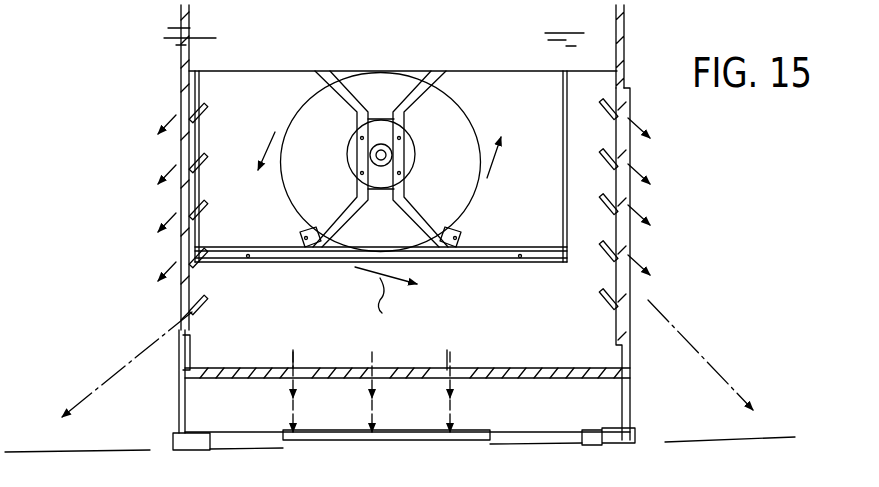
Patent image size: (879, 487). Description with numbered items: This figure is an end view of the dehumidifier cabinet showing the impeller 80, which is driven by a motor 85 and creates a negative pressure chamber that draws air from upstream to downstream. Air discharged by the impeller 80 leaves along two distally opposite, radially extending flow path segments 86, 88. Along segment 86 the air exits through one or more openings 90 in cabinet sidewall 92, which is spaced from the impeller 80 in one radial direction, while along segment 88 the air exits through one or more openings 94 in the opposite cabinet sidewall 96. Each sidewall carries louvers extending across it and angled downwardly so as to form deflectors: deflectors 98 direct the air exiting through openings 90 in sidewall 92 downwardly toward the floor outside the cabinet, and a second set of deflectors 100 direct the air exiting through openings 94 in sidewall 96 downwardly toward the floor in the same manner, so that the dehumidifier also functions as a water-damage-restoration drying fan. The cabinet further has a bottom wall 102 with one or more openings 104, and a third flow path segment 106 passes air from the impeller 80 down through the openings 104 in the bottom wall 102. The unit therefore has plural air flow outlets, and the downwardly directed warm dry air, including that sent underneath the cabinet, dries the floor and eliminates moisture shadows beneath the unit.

The impeller 80 is at (312, 205).
The motor 85 is at (388, 138).
The air flow path segment 86 is at (677, 330).
The air flow path segment 88 is at (181, 268).
The openings 90 is at (630, 142).
The cabinet sidewall 92 is at (625, 70).
The openings 94 is at (181, 150).
The cabinet sidewall 96 is at (181, 70).
The deflectors 98 is at (606, 155).
The deflectors 100 is at (199, 116).
The bottom wall 102 is at (312, 368).
The openings 104 is at (370, 378).
The air flow path segment 106 is at (447, 355).